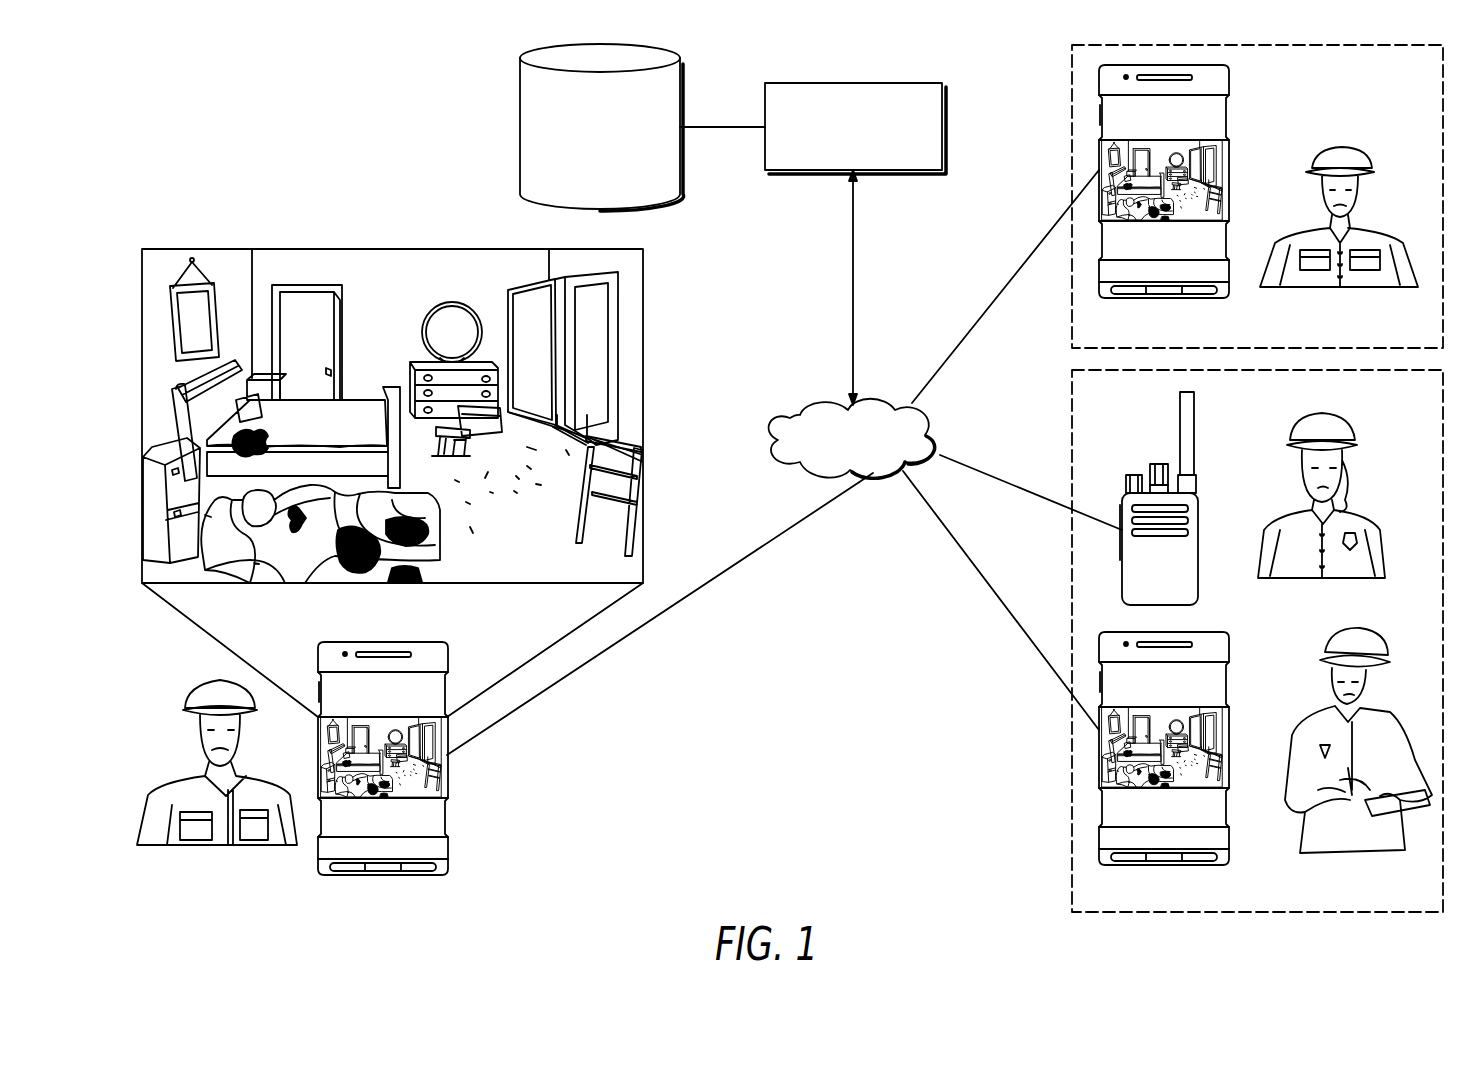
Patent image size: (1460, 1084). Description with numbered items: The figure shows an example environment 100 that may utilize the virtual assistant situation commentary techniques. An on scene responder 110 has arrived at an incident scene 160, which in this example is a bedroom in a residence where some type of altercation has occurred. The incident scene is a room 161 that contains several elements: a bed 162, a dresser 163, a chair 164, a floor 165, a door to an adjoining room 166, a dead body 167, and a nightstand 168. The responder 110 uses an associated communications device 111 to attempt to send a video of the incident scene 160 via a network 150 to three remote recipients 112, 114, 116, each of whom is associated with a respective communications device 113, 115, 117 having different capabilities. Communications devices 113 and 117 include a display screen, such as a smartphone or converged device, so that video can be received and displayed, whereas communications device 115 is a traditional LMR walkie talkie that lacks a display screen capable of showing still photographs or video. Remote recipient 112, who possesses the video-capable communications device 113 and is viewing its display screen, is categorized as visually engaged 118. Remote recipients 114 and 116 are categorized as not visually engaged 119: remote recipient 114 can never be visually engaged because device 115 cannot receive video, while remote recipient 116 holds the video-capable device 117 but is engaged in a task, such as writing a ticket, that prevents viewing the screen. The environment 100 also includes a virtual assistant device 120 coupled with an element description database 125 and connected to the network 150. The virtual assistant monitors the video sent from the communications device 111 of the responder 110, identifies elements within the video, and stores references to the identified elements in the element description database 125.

The environment 100 is at (759, 477).
The on scene responder 110 is at (178, 775).
The communications device 111 is at (448, 812).
The remote recipient 112 is at (1350, 148).
The communications device 113 is at (1230, 130).
The remote recipient 114 is at (1345, 413).
The communications device 115 is at (1160, 462).
The remote recipient 116 is at (1338, 638).
The communications device 117 is at (1230, 695).
The visually engaged 118 is at (1072, 127).
The not visually engaged 119 is at (1072, 770).
The virtual assistant device 120 is at (855, 83).
The element description database 125 is at (520, 123).
The network 150 is at (800, 409).
The incident scene 160 is at (331, 227).
The room 161 is at (643, 292).
The bed 162 is at (185, 387).
The dresser 163 is at (430, 310).
The chair 164 is at (452, 458).
The floor 165 is at (517, 560).
The door to an adjoining room 166 is at (533, 290).
The dead body 167 is at (305, 540).
The nightstand 168 is at (152, 517).